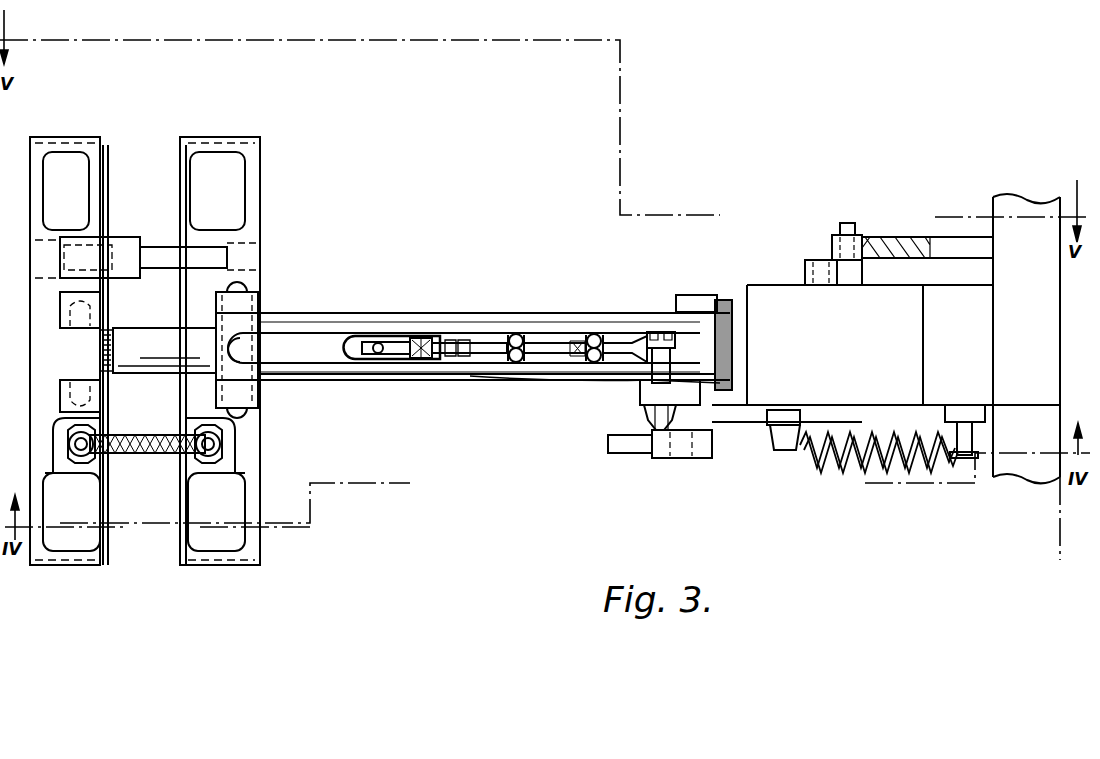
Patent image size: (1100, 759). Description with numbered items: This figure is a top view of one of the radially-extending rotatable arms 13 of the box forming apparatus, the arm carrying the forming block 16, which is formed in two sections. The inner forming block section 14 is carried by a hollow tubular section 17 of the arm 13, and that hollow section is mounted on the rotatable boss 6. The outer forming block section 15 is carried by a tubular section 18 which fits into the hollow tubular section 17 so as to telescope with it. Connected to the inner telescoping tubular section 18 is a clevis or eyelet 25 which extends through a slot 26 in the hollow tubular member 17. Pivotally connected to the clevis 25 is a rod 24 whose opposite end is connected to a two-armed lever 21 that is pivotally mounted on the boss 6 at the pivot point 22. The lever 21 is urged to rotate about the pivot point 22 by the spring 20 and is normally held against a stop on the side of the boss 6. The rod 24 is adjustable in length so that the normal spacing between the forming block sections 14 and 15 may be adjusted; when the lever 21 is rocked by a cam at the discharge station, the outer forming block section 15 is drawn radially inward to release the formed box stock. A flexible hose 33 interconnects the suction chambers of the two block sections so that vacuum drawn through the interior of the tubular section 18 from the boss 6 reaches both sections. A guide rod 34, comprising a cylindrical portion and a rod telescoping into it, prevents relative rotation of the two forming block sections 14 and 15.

The rotatable boss 6 is at (762, 292).
The rotatable arm 13 is at (570, 312).
The inner forming block section 14 is at (228, 512).
The outer forming block section 15 is at (85, 512).
The forming block 16 is at (205, 570).
The hollow tubular section 17 is at (562, 382).
The telescoping tubular section 18 is at (142, 326).
The spring 20 is at (812, 470).
The two-armed lever 21 is at (650, 460).
The pivot point 22 is at (685, 458).
The rod 24 is at (515, 335).
The clevis 25 is at (382, 340).
The slot 26 is at (302, 362).
The flexible hose 33 is at (150, 458).
The guide rod 34 is at (215, 248).